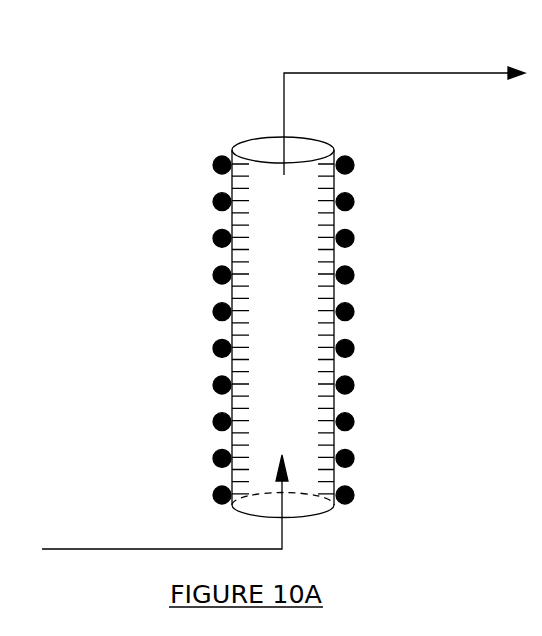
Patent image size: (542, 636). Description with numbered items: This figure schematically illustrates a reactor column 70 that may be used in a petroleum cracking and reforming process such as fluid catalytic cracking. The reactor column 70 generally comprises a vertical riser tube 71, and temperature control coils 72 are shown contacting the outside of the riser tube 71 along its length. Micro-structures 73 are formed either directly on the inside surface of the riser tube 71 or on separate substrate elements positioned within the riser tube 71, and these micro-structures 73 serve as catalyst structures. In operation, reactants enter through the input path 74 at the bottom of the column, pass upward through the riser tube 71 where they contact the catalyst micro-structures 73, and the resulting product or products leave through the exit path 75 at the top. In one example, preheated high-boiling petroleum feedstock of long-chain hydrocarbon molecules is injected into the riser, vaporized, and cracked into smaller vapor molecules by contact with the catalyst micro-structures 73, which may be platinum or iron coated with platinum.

The reactor column 70 is at (369, 271).
The riser tube 71 is at (333, 140).
The temperature control coils 72 is at (360, 345).
The micro-structures 73 is at (233, 153).
The input path 74 is at (165, 502).
The exit path 75 is at (404, 112).